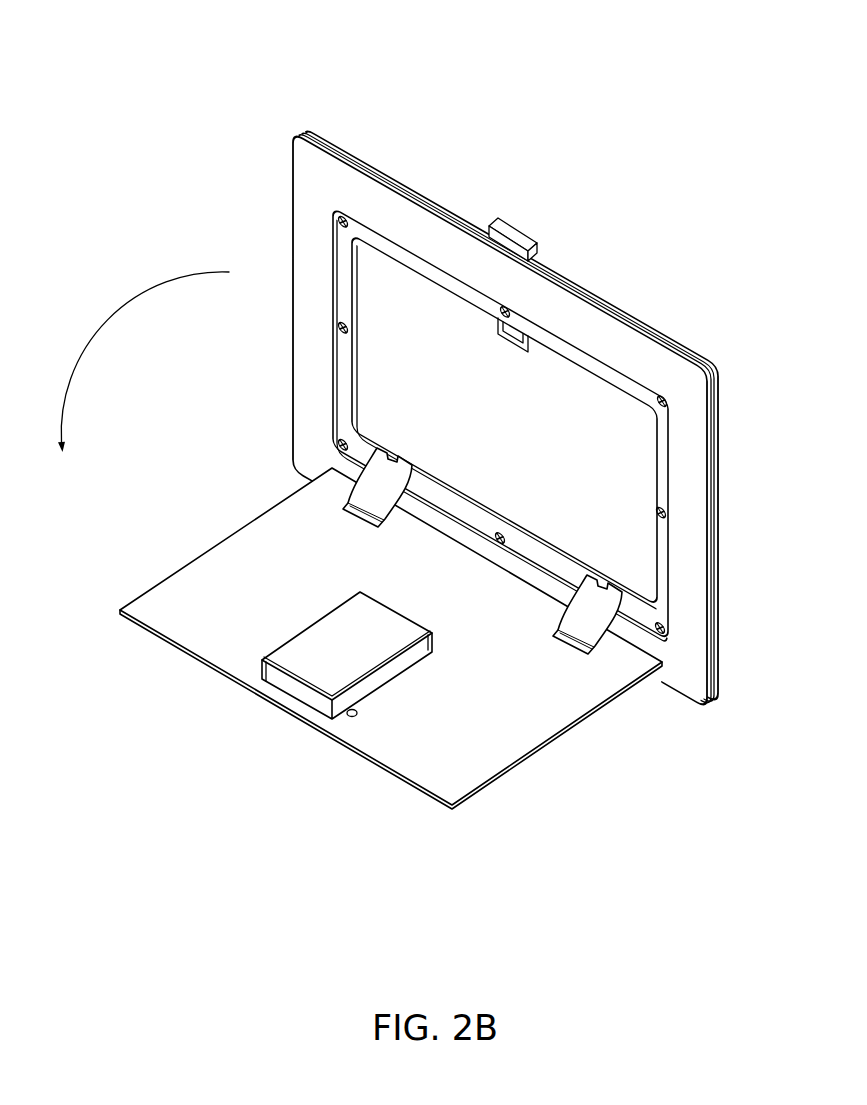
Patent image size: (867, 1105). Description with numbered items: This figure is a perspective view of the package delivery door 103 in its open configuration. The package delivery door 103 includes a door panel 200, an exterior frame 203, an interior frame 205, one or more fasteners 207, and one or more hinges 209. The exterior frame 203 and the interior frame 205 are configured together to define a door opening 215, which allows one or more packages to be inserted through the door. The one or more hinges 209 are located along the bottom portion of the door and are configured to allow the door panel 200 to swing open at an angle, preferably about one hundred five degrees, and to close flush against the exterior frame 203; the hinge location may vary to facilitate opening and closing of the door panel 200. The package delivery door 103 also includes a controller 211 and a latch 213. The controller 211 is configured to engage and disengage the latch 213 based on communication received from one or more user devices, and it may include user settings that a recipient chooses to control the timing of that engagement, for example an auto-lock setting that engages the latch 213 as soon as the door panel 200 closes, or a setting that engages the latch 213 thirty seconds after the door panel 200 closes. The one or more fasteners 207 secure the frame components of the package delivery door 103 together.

The package delivery door 103 is at (130, 57).
The door panel 200 is at (152, 648).
The exterior frame 203 is at (282, 319).
The interior frame 205 is at (592, 281).
The fasteners 207 is at (658, 392).
The hinges 209 is at (599, 632).
The controller 211 is at (298, 685).
The latch 213 is at (526, 217).
The door opening 215 is at (638, 551).